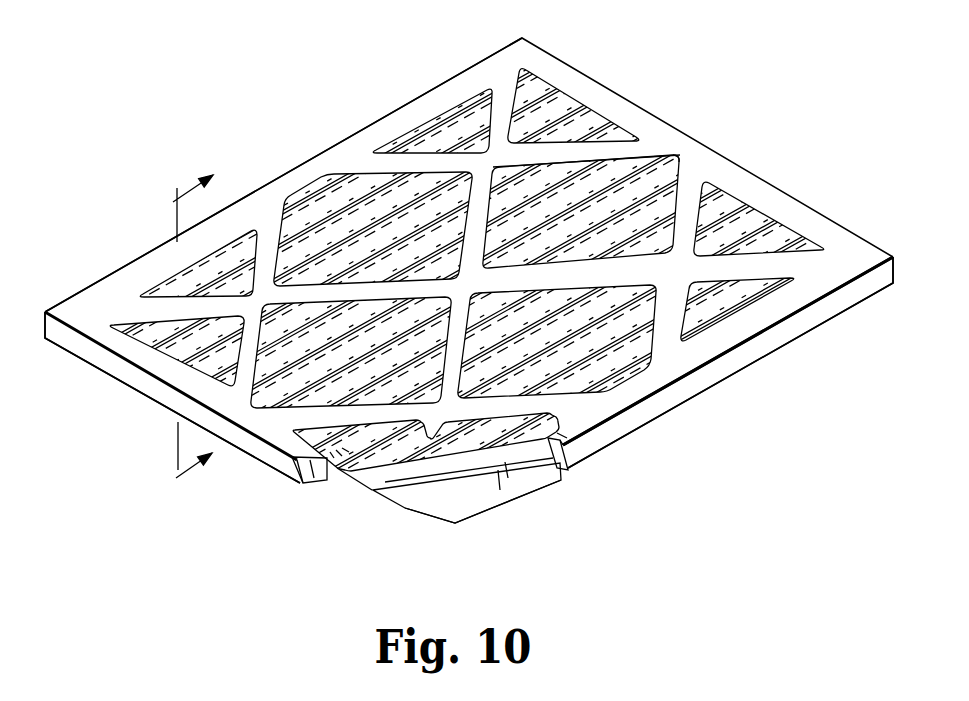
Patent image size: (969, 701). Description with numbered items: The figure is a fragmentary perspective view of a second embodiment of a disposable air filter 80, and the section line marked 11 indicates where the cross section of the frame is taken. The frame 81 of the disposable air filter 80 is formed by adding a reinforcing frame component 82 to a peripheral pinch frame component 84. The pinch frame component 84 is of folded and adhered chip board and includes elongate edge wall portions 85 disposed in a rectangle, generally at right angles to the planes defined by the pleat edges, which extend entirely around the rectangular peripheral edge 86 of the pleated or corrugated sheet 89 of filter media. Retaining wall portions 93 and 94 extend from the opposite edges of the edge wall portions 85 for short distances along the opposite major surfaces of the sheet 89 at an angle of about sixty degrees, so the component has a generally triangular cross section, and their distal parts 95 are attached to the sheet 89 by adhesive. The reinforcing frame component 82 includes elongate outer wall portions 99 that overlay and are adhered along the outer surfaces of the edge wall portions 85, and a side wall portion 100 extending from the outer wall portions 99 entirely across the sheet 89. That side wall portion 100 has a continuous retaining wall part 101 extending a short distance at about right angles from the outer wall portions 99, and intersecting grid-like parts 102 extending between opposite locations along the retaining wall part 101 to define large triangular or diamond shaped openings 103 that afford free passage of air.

The disposable air filter 80 is at (761, 97).
The frame 81 is at (680, 408).
The reinforcing frame component 82 is at (328, 148).
The peripheral pinch frame component 84 is at (307, 490).
The edge wall portions 85 is at (297, 487).
The rectangular peripheral edge 86 is at (457, 523).
The pleated or corrugated sheet of filter media 89 is at (393, 505).
The retaining wall portion 93 is at (318, 472).
The retaining wall portion 94 is at (293, 463).
The distal parts 95 is at (327, 470).
The outer wall portions 99 is at (107, 365).
The side wall portion 100 is at (428, 100).
The retaining wall part 101 is at (233, 220).
The grid-like parts 102 is at (598, 155).
The openings 103 is at (688, 166).
The section line 11- 11 is at (167, 340).